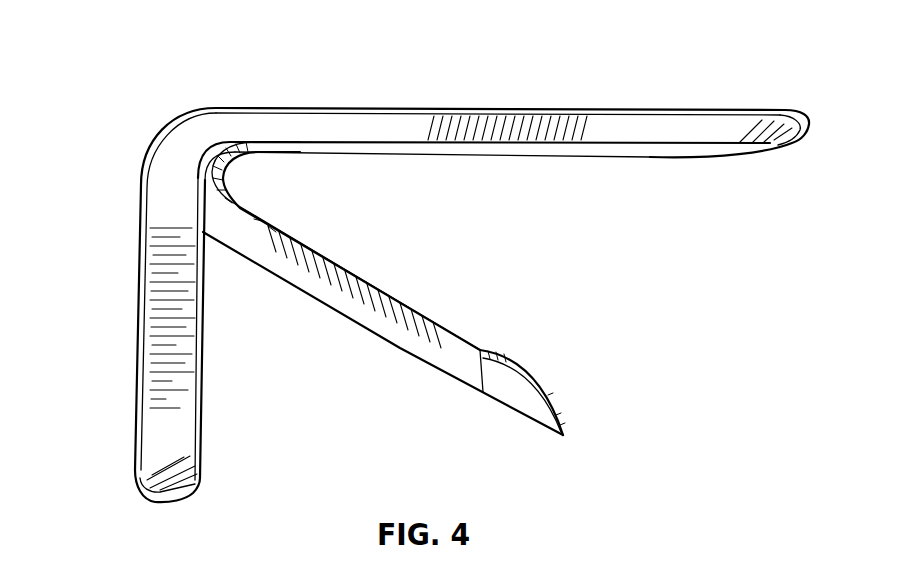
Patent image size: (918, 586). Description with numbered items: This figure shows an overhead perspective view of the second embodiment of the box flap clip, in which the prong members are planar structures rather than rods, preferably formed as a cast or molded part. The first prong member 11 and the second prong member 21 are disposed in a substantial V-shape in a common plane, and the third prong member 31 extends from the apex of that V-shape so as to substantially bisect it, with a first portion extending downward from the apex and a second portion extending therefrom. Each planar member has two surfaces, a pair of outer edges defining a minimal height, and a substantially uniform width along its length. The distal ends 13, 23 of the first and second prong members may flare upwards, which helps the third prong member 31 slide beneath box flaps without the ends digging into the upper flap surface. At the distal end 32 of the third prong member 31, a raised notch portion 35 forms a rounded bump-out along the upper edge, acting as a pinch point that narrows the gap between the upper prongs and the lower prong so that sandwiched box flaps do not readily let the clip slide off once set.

The first prong member 11 is at (110, 313).
The distal end of first prong member 13 is at (170, 487).
The second prong member 21 is at (532, 89).
The distal end of second prong member 23 is at (790, 132).
The third prong member 31 is at (365, 376).
The distal end of third prong member 32 is at (512, 402).
The raised notch portion 35 is at (523, 368).